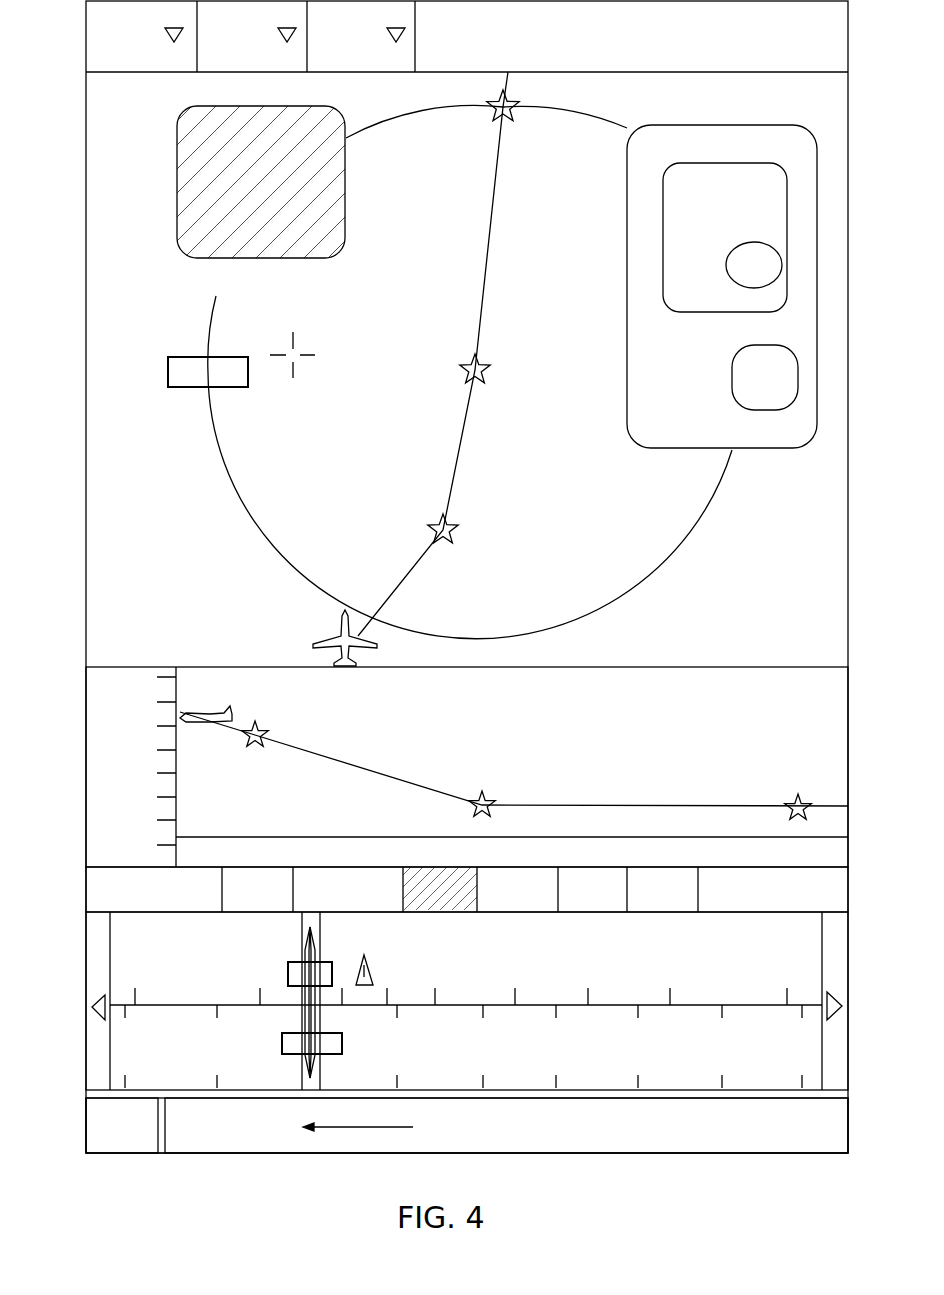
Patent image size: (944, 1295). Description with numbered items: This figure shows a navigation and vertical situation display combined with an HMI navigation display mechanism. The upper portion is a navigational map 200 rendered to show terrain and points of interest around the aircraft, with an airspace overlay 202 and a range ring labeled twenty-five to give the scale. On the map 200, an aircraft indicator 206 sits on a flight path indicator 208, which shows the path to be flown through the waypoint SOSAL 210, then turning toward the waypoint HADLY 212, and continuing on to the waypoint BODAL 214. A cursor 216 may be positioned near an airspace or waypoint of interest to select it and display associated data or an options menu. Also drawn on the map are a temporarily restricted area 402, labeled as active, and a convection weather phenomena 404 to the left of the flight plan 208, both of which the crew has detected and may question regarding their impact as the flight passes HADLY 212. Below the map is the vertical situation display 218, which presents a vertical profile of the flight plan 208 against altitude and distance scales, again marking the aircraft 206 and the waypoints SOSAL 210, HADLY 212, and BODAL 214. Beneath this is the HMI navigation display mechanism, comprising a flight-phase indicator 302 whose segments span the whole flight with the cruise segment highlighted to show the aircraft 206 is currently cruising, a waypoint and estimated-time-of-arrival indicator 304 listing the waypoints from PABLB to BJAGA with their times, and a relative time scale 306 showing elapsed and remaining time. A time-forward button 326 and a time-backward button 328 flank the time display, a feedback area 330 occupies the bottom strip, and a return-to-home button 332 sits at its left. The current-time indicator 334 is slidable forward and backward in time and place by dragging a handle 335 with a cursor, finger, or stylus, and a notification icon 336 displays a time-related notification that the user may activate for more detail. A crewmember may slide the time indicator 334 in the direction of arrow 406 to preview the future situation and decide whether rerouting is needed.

The navigational map 200 is at (86, 157).
The airspace overlay 202 is at (187, 588).
The aircraft indicator 206 is at (322, 636).
The flight path indicator 208 is at (490, 260).
The waypoint SOSAL 210 is at (436, 524).
The waypoint HADLY 212 is at (462, 380).
The waypoint BODAL 214 is at (493, 118).
The cursor 216 is at (292, 336).
The vertical situation display 218 is at (86, 752).
The flight-phase indicator 302 is at (848, 890).
The waypoint and estimated-time-of-arrival indicator 304 is at (820, 966).
The relative time scale 306 is at (820, 1072).
The time-forward button 326 is at (843, 948).
The time-backward button 328 is at (86, 988).
The feedback area 330 is at (818, 1153).
The return-to-home button 332 is at (115, 1153).
The current-time indicator 334 is at (302, 1013).
The handle 335 is at (310, 1080).
The notification icon 336 is at (365, 986).
The temporarily restricted area 402 is at (343, 232).
The convection weather phenomena 404 is at (627, 411).
The arrow 406 is at (355, 1128).